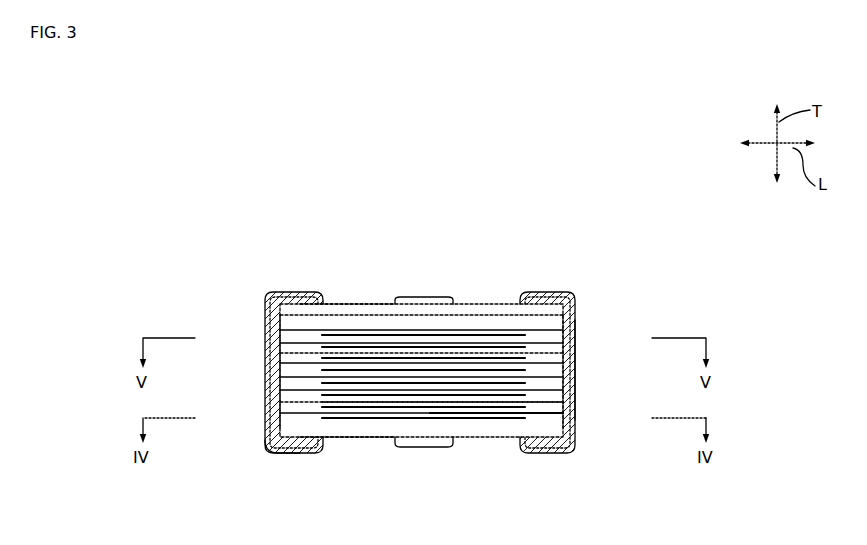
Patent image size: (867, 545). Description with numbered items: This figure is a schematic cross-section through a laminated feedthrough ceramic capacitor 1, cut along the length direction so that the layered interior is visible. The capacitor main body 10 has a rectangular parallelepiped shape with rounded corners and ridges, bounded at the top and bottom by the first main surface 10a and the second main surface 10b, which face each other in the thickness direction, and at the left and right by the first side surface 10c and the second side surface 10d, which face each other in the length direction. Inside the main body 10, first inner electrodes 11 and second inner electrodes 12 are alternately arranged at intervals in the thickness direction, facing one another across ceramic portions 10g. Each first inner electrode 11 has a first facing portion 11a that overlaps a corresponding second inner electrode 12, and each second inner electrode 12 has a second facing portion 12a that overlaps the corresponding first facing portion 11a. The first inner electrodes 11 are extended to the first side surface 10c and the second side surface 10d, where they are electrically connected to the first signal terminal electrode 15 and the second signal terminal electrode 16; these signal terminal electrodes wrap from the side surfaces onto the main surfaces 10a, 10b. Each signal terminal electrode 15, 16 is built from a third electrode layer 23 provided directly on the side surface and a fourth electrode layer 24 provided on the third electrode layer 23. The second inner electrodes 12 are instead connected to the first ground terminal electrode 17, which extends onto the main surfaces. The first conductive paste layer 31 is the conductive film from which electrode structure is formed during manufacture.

The laminated feedthrough ceramic capacitor 1 is at (593, 233).
The capacitor main body 10 is at (478, 305).
The first main surface 10a is at (352, 304).
The second main surface 10b is at (353, 438).
The first side surface 10c is at (278, 420).
The second side surface 10d is at (563, 421).
The ceramic portion 10g is at (440, 407).
The first inner electrode 11 is at (309, 412).
The first facing portion 11a is at (347, 412).
The second inner electrode 12 is at (468, 412).
The second facing portion 12a is at (503, 412).
The first signal terminal electrode 15 is at (267, 322).
The second signal terminal electrode 16 is at (577, 306).
The first ground terminal electrode 17 is at (413, 447).
The third electrode layer 23 is at (575, 335).
The fourth electrode layer 24 is at (577, 360).
The first conductive paste layer 31 is at (283, 452).